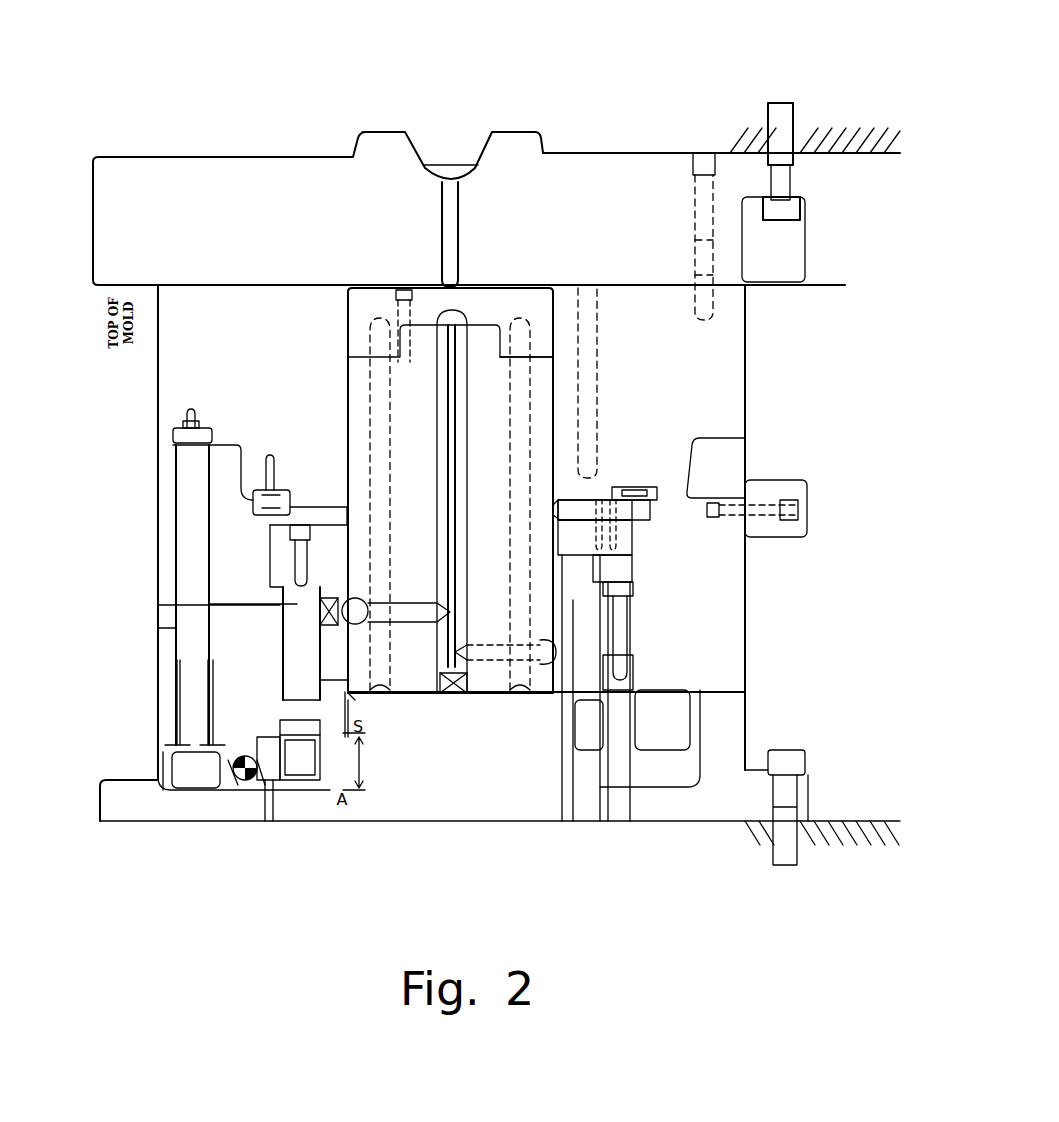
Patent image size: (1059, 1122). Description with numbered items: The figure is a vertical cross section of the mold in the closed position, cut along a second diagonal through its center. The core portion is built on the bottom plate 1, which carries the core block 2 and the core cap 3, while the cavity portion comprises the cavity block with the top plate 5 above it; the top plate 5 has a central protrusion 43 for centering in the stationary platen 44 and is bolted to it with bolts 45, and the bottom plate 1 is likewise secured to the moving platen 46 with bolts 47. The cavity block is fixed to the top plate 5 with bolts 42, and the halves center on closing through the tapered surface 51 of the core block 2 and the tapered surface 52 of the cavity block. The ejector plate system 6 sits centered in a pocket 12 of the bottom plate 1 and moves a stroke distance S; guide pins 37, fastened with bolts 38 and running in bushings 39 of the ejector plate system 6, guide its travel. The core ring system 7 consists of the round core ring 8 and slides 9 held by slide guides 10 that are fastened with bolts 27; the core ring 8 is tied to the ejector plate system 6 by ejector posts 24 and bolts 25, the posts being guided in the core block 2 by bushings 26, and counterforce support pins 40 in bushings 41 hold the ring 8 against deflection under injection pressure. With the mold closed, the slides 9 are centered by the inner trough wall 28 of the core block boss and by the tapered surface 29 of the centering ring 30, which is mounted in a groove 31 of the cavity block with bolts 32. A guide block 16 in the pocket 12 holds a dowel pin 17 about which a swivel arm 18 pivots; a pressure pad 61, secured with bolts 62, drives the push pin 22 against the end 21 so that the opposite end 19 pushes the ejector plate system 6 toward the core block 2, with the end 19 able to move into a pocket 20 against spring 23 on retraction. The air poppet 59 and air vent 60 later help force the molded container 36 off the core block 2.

The bottom plate 1 is at (487, 777).
The core block 2 is at (415, 667).
The core cap 3 is at (540, 306).
The top plate 5 is at (612, 195).
The ejector plate system 6 is at (692, 778).
The core ring system 7 is at (876, 505).
The core ring 8 is at (583, 537).
The slides 9 is at (572, 515).
The slide guides 10 is at (615, 497).
The pocket 12 is at (718, 820).
The guide block 16 is at (245, 770).
The dowel pin 17 is at (248, 780).
The swivel arm 18 is at (228, 772).
The end of swivel arm 19 is at (305, 763).
The pocket 20 is at (285, 817).
The end of swivel arm 21 is at (182, 770).
The push pin 22 is at (187, 590).
The spring 23 is at (183, 705).
The ejector posts 24 is at (295, 665).
The bolts 25 is at (297, 535).
The bushings 26 is at (277, 618).
The bolts 27 is at (600, 503).
The inner trough wall 28 is at (625, 533).
The tapered surface 29 is at (260, 502).
The centering ring 30 is at (255, 493).
The groove 31 is at (287, 490).
The bolts 32 is at (258, 511).
The molded container 36 is at (373, 300).
The guide pins 37 is at (660, 735).
The bolts 38 is at (625, 590).
The bushings 39 is at (660, 700).
The counterforce support pins 40 is at (571, 663).
The bushings 41 is at (625, 792).
The bolts 42 is at (698, 162).
The central protrusion 43 is at (545, 135).
The stationary platen 44 is at (825, 153).
The bolts 45 is at (790, 208).
The moving platen 46 is at (827, 821).
The bolts 47 is at (790, 762).
The tapered surface 51 is at (650, 497).
The tapered surface 52 is at (577, 507).
The air poppet 59 is at (403, 292).
The air vent 60 is at (500, 357).
The pressure pad 61 is at (186, 421).
The bolts 62 is at (205, 436).